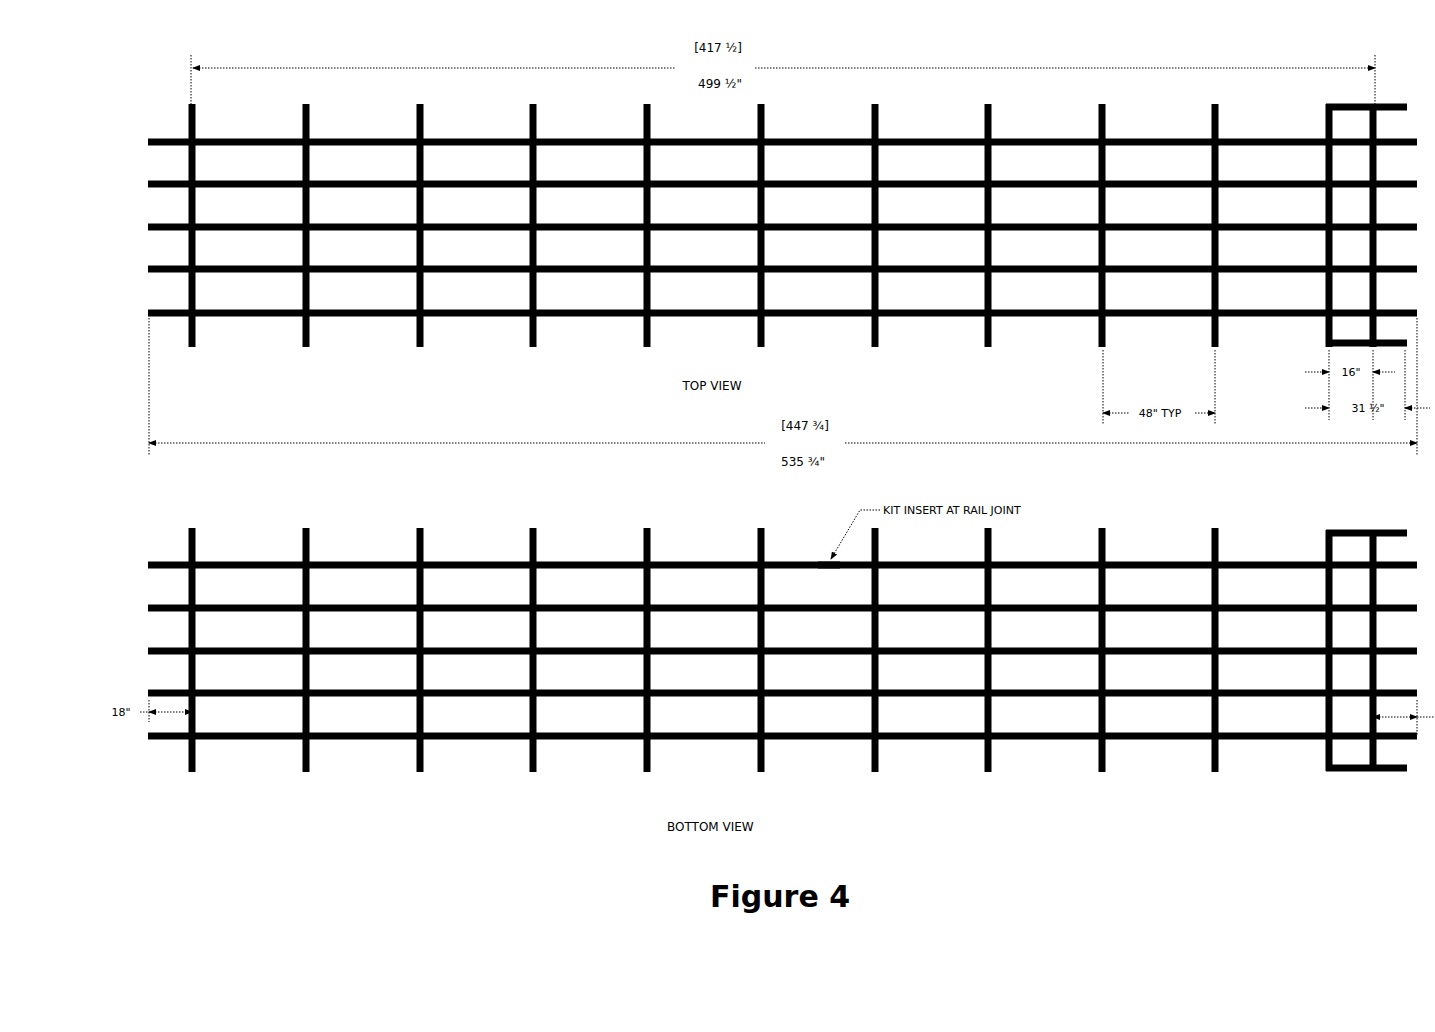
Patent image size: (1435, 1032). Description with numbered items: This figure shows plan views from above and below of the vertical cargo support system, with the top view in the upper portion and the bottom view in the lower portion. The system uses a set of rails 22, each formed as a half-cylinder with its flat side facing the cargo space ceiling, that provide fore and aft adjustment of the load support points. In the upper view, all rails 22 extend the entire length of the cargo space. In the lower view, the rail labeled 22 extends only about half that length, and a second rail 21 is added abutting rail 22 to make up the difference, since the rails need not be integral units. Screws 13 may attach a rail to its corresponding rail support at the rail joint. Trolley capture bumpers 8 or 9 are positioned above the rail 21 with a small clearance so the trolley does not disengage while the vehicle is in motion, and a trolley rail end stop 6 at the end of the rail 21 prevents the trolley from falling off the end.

The trolley rail end stop 6 is at (150, 184).
The trolley capture bumper 8 is at (208, 138).
The trolley capture bumper 9 is at (1363, 135).
The screws 13 is at (828, 558).
The second rail 21 is at (557, 740).
The rail 22 is at (843, 740).